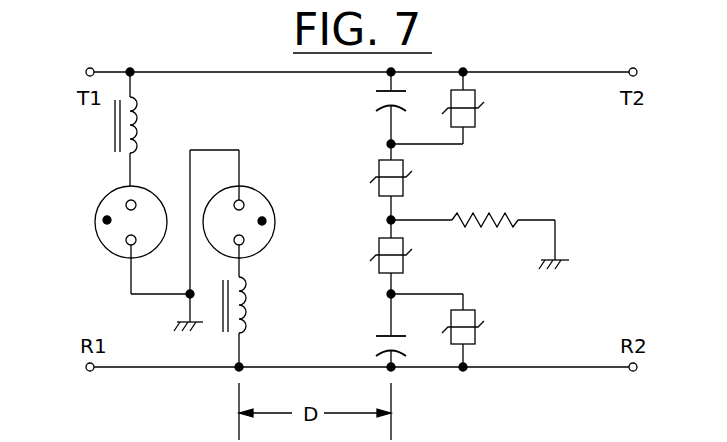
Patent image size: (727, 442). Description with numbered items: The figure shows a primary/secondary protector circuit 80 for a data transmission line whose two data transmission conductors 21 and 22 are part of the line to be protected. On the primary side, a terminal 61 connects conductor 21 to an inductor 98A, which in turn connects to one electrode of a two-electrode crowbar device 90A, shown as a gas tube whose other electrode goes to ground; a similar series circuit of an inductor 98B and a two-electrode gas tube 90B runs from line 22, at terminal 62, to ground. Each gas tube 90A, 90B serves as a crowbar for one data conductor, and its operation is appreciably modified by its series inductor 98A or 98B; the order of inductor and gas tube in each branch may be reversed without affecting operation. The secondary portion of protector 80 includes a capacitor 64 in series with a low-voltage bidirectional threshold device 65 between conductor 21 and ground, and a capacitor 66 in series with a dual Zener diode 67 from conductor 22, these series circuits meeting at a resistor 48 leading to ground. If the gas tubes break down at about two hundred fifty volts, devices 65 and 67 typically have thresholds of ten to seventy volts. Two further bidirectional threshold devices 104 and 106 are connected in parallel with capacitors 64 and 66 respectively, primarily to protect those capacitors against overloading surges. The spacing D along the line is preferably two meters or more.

The data transmission conductor 21 is at (187, 76).
The data transmission conductor 22 is at (275, 366).
The resistor 48 is at (487, 213).
The terminal 61 is at (133, 75).
The terminal 62 is at (236, 365).
The capacitor 64 is at (375, 101).
The bidirectional threshold device 65 is at (372, 167).
The capacitor 66 is at (377, 343).
The dual Zener diode 67 is at (372, 248).
The primary/secondary protector circuit 80 is at (300, 112).
The two-electrode crowbar device 90A is at (115, 250).
The two-electrode gas tube 90B is at (253, 198).
The inductor 98A is at (112, 141).
The inductor 98B is at (243, 318).
The bidirectional threshold device 104 is at (477, 118).
The bidirectional threshold device 106 is at (473, 343).